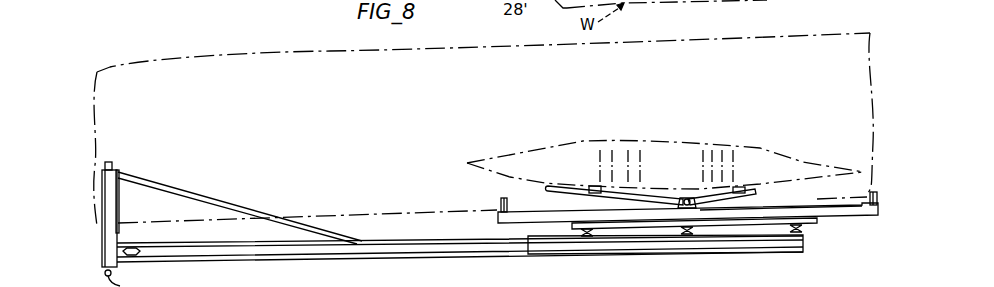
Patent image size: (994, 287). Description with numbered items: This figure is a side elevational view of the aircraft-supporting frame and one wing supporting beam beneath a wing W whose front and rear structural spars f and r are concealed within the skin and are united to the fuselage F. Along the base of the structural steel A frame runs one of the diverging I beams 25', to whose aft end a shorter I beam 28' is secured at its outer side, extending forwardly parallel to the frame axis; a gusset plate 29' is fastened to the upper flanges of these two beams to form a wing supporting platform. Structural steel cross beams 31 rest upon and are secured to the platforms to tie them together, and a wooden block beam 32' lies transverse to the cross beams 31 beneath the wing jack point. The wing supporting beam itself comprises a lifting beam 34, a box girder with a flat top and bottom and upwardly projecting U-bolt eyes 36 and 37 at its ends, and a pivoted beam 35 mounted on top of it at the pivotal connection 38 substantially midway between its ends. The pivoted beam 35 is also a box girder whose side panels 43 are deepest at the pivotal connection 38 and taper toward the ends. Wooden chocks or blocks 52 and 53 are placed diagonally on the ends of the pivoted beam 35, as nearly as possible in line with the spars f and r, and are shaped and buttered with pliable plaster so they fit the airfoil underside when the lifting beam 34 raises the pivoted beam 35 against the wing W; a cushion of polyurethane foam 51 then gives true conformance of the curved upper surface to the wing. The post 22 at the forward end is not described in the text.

The fuselage F is at (268, 50).
The wing W is at (584, 140).
The front structural spar f is at (598, 163).
The rear structural spar r is at (737, 164).
The hitch post 22 is at (116, 260).
The I beam 25' is at (259, 228).
The shorter I beam 28' is at (665, 259).
The gusset plate 29' is at (671, 229).
The cross beams 31 is at (798, 232).
The block beam 32' is at (781, 199).
The lifting beam 34 is at (512, 218).
The pivoted beam 35 is at (566, 196).
The U-bolt eye 36 is at (500, 203).
The U-bolt eye 37 is at (867, 216).
The pivotal connection 38 is at (690, 199).
The side panel 43 is at (652, 200).
The polyurethane foam cushion 51 is at (675, 190).
The wooden chock or block 52 is at (592, 186).
The wooden chock or block 53 is at (745, 188).